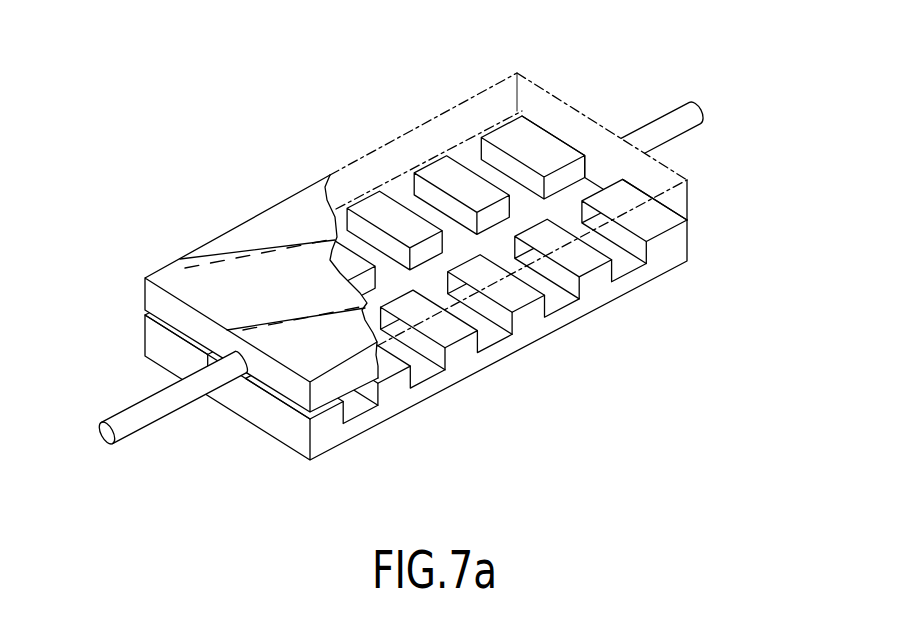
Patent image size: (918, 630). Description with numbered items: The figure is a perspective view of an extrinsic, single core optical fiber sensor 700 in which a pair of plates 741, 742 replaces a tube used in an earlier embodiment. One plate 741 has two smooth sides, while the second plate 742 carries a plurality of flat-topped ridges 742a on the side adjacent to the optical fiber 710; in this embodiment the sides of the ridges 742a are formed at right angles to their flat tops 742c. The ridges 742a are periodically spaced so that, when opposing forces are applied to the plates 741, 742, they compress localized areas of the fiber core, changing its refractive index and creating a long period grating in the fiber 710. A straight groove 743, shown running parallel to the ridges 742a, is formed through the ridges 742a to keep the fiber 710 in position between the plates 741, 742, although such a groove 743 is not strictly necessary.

The sensor 700 is at (298, 90).
The optical fiber 710 is at (655, 116).
The plate 741 is at (250, 235).
The second plate 742 is at (372, 416).
The ridges 742a is at (670, 240).
The flat tops 742c is at (672, 230).
The groove 743 is at (430, 260).